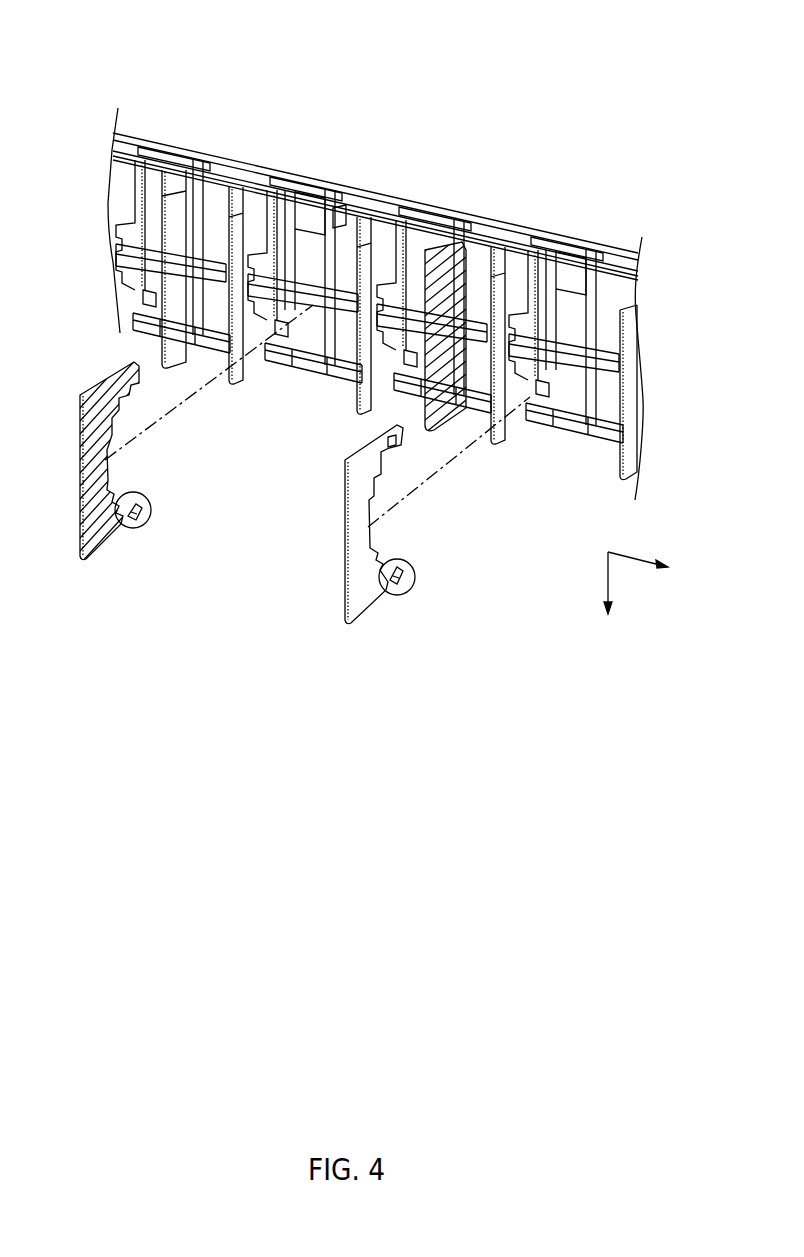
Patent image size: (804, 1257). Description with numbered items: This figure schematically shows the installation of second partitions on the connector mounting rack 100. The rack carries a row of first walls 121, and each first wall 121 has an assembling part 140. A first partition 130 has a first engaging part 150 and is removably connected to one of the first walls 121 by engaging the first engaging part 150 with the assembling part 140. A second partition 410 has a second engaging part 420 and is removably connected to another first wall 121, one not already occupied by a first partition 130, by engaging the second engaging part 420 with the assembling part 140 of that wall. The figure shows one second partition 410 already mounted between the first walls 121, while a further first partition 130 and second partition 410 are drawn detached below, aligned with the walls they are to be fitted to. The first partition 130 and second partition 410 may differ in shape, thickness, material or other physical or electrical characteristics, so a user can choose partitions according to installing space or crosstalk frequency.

The connector mounting rack 100 is at (88, 24).
The first wall 121 is at (340, 216).
The first partition 130 is at (240, 222).
The assembling part 140 is at (345, 383).
The first engaging part 150 is at (413, 583).
The second partition 410 is at (432, 282).
The second engaging part 420 is at (148, 524).